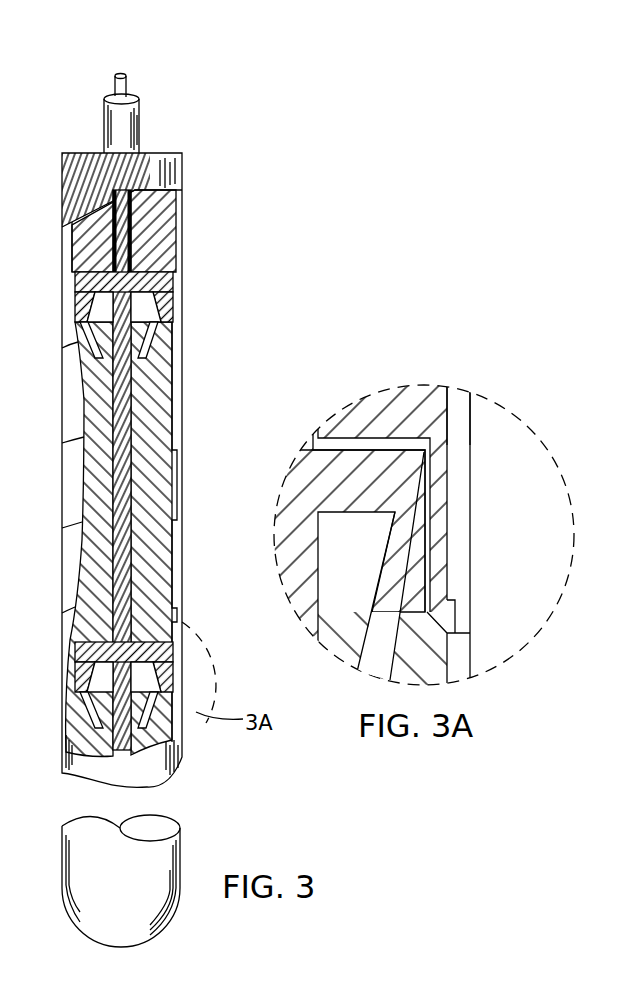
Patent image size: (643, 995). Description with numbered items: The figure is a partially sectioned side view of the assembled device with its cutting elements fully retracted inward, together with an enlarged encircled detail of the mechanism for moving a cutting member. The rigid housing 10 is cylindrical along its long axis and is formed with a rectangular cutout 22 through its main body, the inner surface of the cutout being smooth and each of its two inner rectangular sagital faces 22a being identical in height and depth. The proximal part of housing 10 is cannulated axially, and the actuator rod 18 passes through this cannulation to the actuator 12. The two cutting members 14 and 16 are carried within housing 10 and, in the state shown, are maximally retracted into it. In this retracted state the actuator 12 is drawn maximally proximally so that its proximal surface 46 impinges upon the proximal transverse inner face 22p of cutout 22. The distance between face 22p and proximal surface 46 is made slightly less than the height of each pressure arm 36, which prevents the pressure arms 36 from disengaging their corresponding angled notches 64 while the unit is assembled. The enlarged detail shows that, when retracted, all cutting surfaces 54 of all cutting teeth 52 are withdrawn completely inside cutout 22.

In FIG. 3, the housing 10 is at (165, 152).
In FIG. 3, the actuator 12 is at (122, 423).
In FIG. 3, the cutting member 14 is at (163, 387).
In FIG. 3, the cutting member 16 is at (97, 393).
In FIG. 3, the actuator rod 18 is at (128, 92).
In FIG. 3A, the cutout 22 is at (470, 497).
In FIG. 3A, the inner rectangular sagital face 22a is at (455, 428).
In FIG. 3, the proximal transverse inner face 22p is at (180, 262).
In FIG. 3, the pressure arm 36 is at (165, 300).
In FIG. 3, the proximal surface 46 is at (155, 281).
In FIG. 3A, the cutting tooth 52 is at (470, 577).
In FIG. 3A, the cutting surface 54 is at (468, 610).
In FIG. 3, the angled notch 64 is at (150, 338).